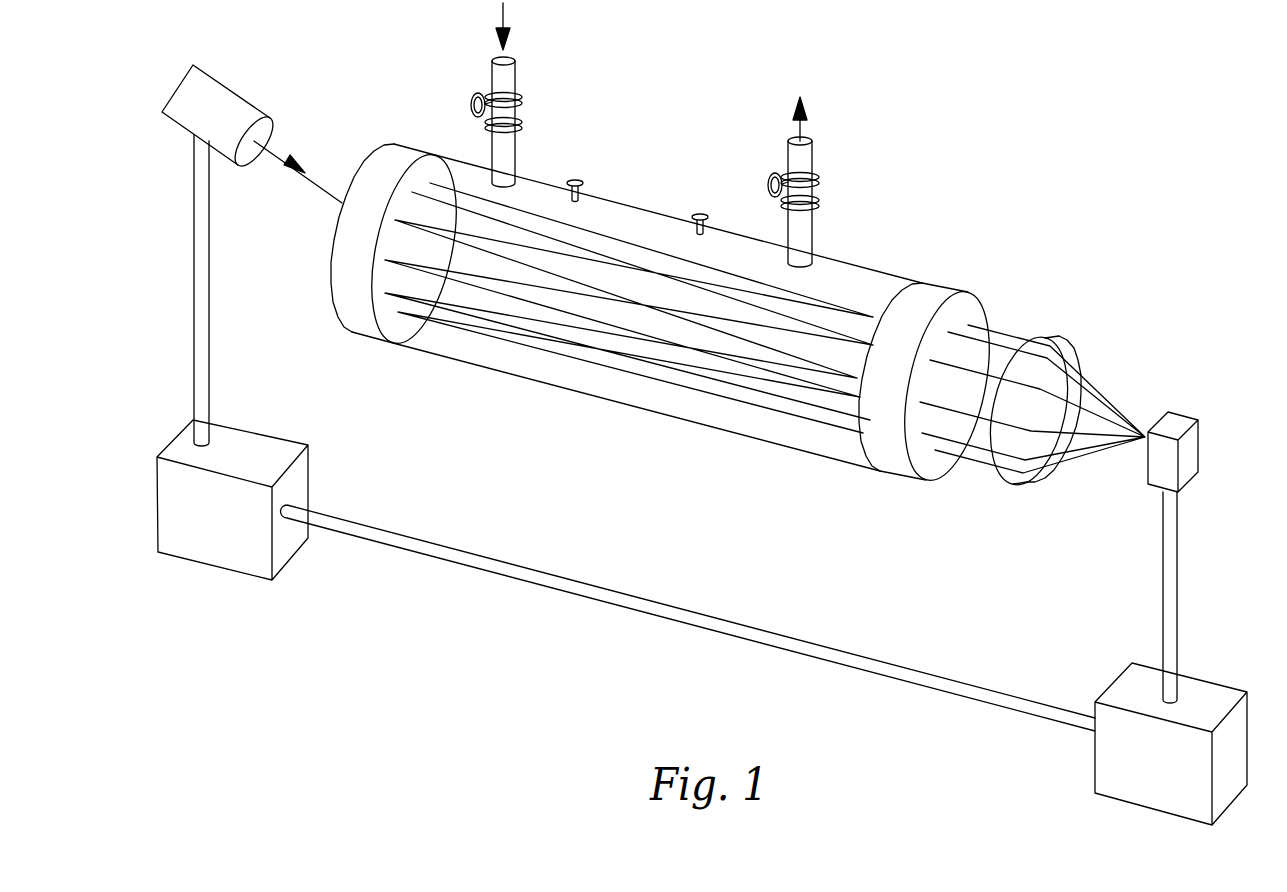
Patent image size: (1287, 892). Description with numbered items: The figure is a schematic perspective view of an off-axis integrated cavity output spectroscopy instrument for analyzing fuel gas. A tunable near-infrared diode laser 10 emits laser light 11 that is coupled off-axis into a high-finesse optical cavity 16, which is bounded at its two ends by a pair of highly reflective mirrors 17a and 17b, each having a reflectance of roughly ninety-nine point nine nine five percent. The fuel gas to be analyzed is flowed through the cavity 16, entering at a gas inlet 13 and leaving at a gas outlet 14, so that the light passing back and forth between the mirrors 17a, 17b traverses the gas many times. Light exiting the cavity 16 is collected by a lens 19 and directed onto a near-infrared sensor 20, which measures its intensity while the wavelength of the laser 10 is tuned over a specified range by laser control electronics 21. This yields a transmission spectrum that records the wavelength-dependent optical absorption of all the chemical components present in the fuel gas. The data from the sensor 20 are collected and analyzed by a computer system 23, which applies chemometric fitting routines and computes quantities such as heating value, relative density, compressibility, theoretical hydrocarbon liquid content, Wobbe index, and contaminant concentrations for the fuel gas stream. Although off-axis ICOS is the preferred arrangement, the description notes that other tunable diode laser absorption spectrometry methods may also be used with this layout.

The tunable near-infrared diode laser 10 is at (220, 78).
The laser light 11 is at (657, 342).
The gas inlet 13 is at (495, 82).
The gas outlet 14 is at (793, 157).
The high-finesse optical cavity 16 is at (697, 405).
The mirror 17a is at (389, 412).
The mirror 17b is at (927, 555).
The lens 19 is at (1050, 337).
The near-infrared sensor 20 is at (1178, 422).
The laser control electronics 21 is at (247, 437).
The computer system 23 is at (1190, 688).